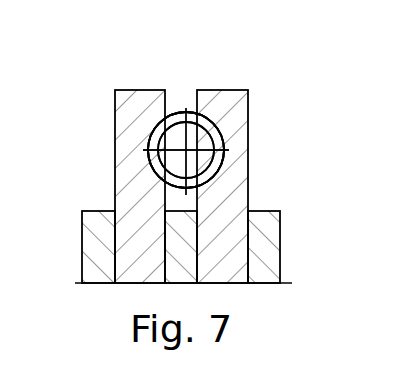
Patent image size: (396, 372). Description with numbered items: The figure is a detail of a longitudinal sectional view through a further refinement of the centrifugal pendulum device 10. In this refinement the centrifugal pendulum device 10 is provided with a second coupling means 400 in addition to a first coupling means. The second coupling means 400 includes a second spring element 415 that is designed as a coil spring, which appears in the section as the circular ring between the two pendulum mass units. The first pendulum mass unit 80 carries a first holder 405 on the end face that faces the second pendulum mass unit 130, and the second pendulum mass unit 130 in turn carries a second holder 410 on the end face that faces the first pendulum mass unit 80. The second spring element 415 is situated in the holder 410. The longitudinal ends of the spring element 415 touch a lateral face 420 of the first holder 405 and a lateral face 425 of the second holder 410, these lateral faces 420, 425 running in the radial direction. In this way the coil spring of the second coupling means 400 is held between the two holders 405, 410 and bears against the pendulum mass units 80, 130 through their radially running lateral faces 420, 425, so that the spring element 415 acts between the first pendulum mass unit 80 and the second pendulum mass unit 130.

The centrifugal pendulum device 10 is at (217, 66).
The first pendulum mass unit 80 is at (125, 78).
The second pendulum mass unit 130 is at (250, 88).
The second coupling means 400 is at (181, 90).
The first holder 405 is at (149, 148).
The second holder 410 is at (212, 116).
The second spring element 415 is at (222, 162).
The lateral face 420 is at (150, 150).
The lateral face 425 is at (224, 144).